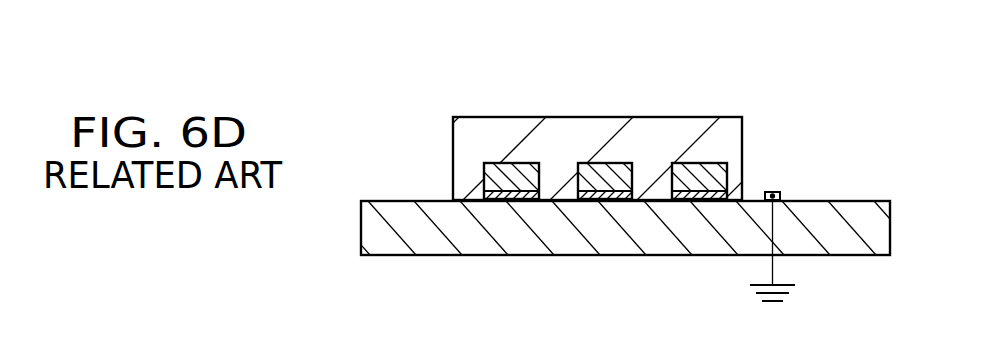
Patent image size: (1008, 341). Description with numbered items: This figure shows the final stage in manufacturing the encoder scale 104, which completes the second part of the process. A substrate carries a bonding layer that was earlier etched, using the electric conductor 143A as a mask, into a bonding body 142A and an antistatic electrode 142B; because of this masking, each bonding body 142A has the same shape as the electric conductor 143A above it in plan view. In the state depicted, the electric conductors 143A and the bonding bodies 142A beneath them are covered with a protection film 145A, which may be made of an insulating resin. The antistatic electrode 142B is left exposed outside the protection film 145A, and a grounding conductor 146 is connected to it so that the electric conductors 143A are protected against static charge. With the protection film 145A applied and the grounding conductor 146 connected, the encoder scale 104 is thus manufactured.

The encoder scale 104 is at (616, 129).
The bonding body 142A is at (480, 198).
The antistatic electrode 142B is at (782, 196).
The electric conductor 143A is at (500, 162).
The protection film 145A is at (722, 117).
The grounding conductor 146 is at (775, 268).